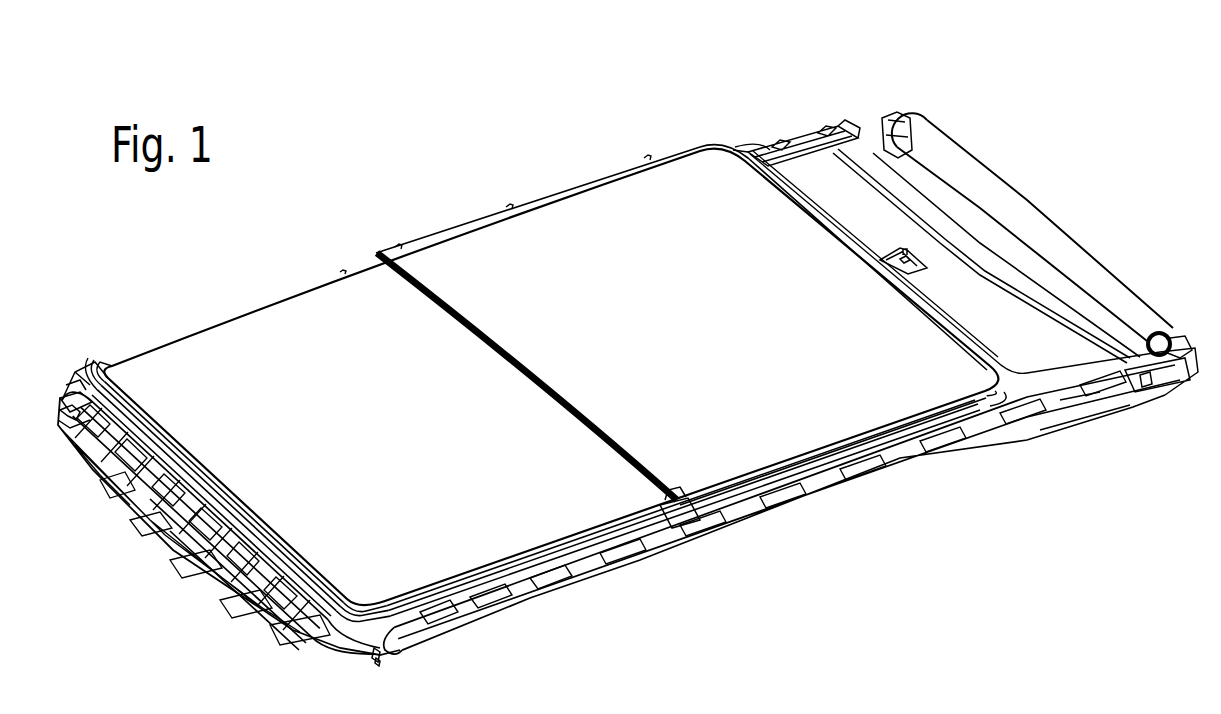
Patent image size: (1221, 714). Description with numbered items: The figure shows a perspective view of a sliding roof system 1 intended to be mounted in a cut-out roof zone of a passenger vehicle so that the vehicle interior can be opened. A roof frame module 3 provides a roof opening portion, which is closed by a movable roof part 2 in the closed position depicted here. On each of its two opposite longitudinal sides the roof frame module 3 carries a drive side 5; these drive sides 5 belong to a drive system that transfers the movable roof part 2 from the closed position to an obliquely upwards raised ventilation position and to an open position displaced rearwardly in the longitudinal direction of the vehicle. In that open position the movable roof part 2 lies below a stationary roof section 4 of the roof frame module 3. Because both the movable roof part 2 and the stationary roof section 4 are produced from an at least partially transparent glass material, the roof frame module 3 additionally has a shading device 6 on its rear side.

The sliding roof system 1 is at (528, 163).
The movable roof part 2 is at (397, 443).
The roof frame module 3 is at (531, 616).
The stationary roof section 4 is at (742, 338).
The drive side 5 is at (206, 305).
The shading device 6 is at (878, 100).